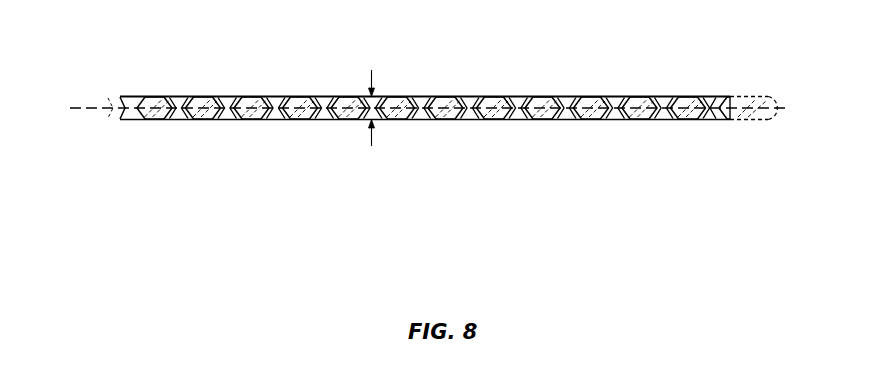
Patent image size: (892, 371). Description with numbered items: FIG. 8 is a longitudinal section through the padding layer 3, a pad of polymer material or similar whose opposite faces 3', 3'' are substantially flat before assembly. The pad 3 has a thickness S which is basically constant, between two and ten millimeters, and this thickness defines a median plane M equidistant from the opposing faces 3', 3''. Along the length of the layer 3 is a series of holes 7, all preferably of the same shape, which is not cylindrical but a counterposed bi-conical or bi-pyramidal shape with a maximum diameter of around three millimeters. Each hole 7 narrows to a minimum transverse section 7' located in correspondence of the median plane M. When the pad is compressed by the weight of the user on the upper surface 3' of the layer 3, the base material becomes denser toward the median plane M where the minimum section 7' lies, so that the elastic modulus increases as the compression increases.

The median plane M is at (80, 108).
The padding layer 3 is at (419, 139).
The upper face 3' is at (753, 81).
The opposite face 3'' is at (749, 131).
The holes 7 is at (443, 71).
The minimum transverse section 7' is at (385, 147).
The thickness S is at (374, 133).